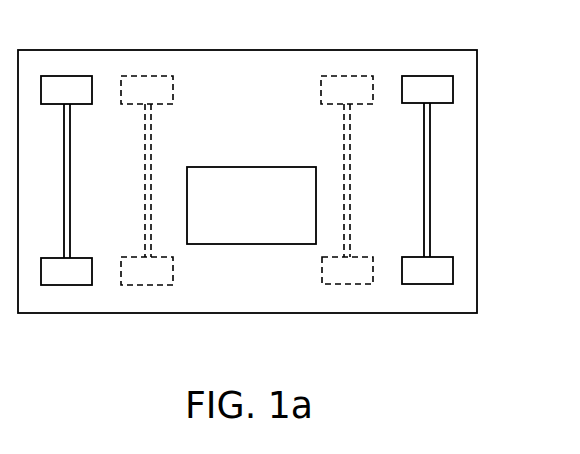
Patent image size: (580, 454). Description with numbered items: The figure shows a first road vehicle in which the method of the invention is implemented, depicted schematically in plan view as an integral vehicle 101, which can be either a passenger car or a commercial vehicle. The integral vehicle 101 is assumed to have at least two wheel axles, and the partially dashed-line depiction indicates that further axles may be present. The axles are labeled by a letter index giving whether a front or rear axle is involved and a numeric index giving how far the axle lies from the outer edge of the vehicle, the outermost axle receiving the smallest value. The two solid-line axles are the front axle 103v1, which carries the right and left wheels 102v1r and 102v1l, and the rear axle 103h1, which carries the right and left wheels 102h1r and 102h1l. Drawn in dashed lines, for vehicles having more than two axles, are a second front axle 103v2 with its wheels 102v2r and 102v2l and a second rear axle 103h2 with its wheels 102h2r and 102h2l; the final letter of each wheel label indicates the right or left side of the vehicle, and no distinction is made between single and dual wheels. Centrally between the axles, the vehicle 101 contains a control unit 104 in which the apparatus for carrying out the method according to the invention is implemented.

The integral vehicle 101 is at (477, 172).
The right wheel of first front axle 102v1r is at (65, 83).
The left wheel of first front axle 102v1l is at (62, 285).
The right wheel of second front axle 102v2r is at (148, 90).
The left wheel of second front axle 102v2l is at (145, 285).
The right wheel of second rear axle 102h2r is at (350, 90).
The left wheel of second rear axle 102h2l is at (344, 285).
The right wheel of first rear axle 102h1r is at (435, 83).
The left wheel of first rear axle 102h1l is at (433, 285).
The front axle 103v1 is at (70, 140).
The second front axle 103v2 is at (151, 177).
The second rear axle 103h2 is at (343, 175).
The rear axle 103h1 is at (423, 140).
The control unit 104 is at (280, 244).